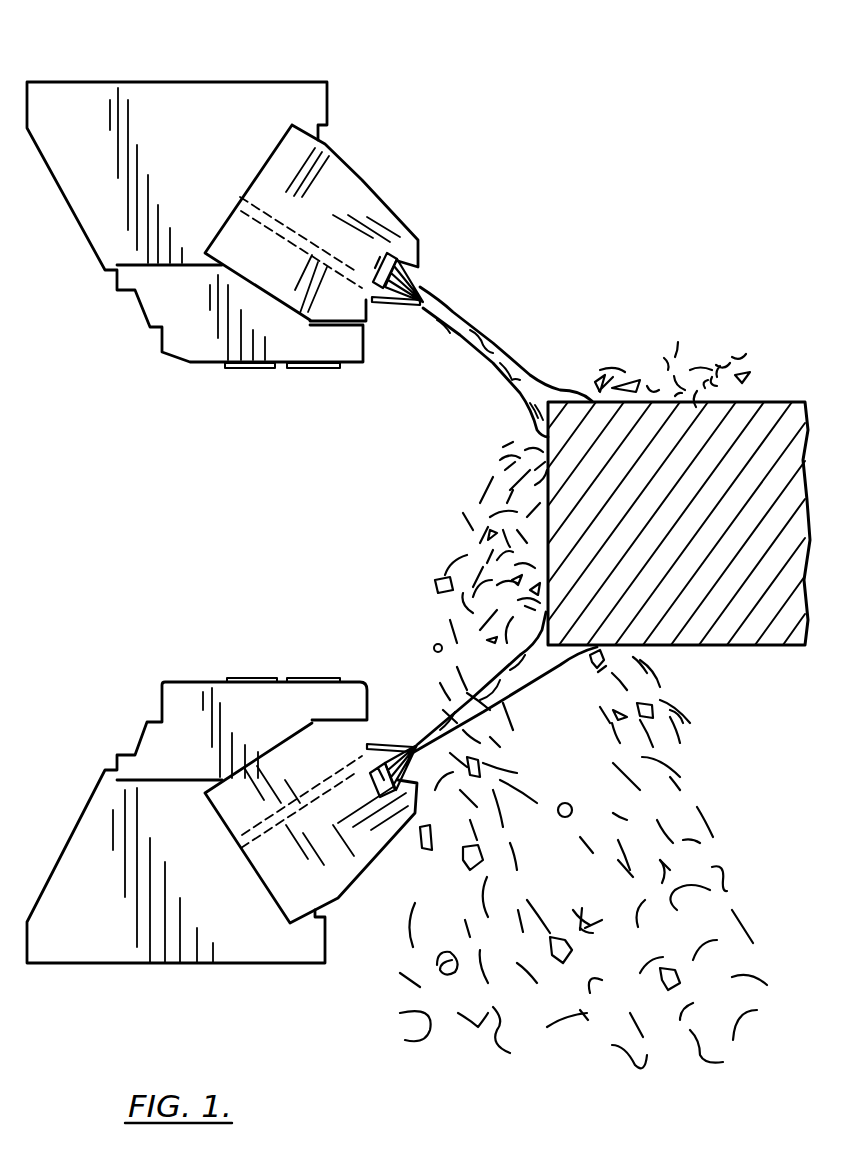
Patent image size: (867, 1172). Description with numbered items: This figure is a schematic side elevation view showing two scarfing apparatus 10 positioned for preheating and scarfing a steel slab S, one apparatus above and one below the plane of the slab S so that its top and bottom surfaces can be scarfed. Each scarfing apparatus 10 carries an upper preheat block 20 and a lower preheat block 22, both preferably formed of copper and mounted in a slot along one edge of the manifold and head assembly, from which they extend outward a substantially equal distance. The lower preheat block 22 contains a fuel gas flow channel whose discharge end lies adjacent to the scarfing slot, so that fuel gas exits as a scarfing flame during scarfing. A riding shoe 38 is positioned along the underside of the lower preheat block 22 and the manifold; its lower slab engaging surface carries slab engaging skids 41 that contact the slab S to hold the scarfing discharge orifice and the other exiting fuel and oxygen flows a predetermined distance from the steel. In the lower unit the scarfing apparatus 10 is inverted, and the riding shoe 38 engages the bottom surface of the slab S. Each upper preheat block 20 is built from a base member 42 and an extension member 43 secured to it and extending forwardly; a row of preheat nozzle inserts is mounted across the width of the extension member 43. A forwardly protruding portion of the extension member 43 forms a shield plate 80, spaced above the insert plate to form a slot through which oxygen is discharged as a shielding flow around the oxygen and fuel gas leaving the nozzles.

The scarfing apparatus 10 is at (256, 483).
The upper preheat block 20 is at (345, 540).
The lower preheat block 22 is at (357, 307).
The riding shoe 38 is at (152, 306).
The slab engaging skids 41 is at (309, 369).
The base member 42 is at (337, 160).
The extension member 43 is at (397, 215).
The shield plate 80 is at (420, 253).
The slab S is at (773, 402).